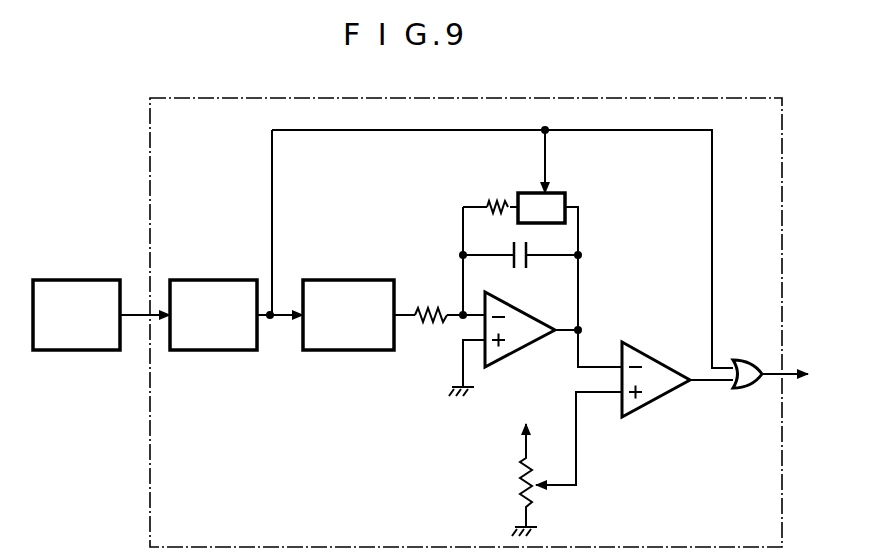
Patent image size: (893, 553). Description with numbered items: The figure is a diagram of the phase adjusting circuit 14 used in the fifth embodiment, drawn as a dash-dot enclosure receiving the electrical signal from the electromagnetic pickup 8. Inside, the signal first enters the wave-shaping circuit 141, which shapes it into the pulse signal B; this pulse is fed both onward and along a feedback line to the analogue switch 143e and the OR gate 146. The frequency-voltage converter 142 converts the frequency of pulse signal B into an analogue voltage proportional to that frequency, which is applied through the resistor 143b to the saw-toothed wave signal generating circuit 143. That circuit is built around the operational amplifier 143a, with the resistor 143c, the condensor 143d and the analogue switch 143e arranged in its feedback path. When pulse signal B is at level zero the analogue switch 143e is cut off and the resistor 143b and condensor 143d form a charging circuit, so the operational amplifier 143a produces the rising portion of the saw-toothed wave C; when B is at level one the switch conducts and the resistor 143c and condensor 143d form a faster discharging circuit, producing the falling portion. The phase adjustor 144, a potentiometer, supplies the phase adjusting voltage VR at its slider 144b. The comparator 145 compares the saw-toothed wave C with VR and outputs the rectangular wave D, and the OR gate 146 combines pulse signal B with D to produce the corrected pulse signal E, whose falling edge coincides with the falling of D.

The phase adjusting circuit 14 is at (668, 99).
The electromagnetic pickup 8 is at (88, 280).
The wave-shaping circuit 141 is at (192, 280).
The frequency-voltage converter 142 is at (324, 280).
The saw-toothed wave signal generating circuit 143 is at (524, 285).
The operational amplifier 143a is at (534, 348).
The resistor 143b is at (424, 313).
The resistor 143c is at (488, 207).
The condensor 143d is at (530, 259).
The analogue switch 143e is at (565, 203).
The phase adjustor 144 is at (519, 476).
The slider 144b is at (566, 483).
The comparator 145 is at (697, 384).
The OR gate 146 is at (727, 366).